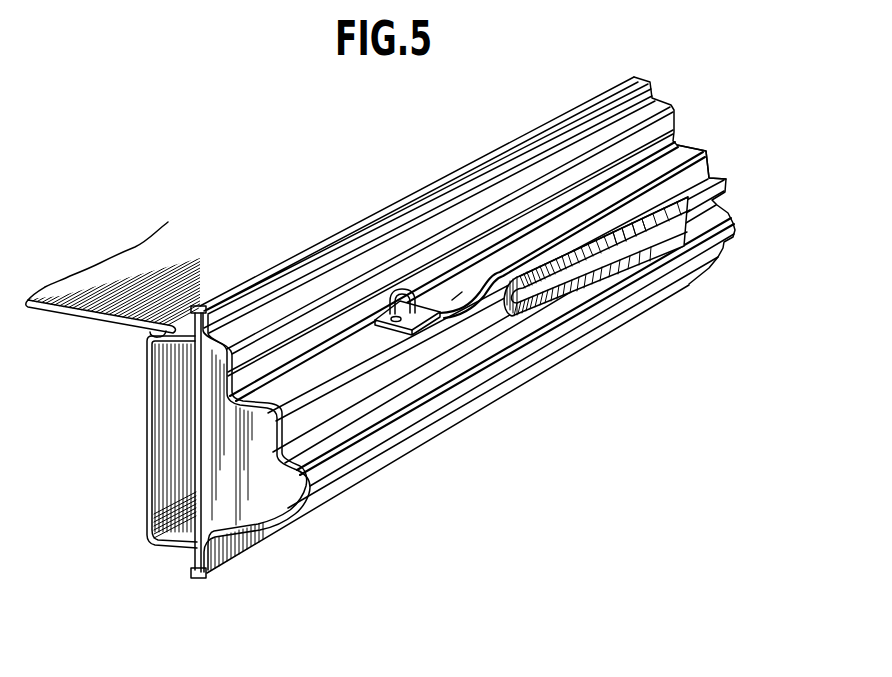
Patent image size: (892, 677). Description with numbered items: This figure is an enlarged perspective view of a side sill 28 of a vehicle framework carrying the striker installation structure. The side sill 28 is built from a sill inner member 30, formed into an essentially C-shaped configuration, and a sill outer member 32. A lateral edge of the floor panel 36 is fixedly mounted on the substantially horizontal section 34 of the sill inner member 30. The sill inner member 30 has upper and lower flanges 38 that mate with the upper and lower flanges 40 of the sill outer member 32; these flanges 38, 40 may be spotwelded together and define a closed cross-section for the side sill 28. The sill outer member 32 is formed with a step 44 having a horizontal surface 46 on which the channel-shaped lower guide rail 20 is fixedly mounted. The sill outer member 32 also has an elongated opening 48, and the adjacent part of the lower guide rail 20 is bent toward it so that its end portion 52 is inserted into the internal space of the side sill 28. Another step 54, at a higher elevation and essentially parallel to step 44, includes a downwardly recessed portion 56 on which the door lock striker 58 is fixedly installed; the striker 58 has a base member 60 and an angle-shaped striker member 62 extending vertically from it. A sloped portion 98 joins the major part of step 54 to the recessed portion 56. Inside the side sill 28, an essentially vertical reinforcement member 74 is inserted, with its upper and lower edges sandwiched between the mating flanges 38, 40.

The lower guide rail 20 is at (617, 268).
The side sill 28 is at (692, 127).
The sill inner member 30 is at (147, 503).
The sill outer member 32 is at (284, 524).
The horizontal section 34 is at (148, 333).
The floor panel 36 is at (67, 316).
The upper and lower flanges 38 is at (186, 306).
The upper and lower flanges 40 is at (210, 302).
The step 44 is at (368, 458).
The horizontal surface 46 is at (510, 353).
The elongated opening 48 is at (537, 310).
The end portion 52 is at (526, 276).
The step 54 is at (706, 151).
The downwardly recessed portion 56 is at (350, 353).
The door lock striker 58 is at (437, 276).
The base member 60 is at (380, 306).
The angle-shaped striker member 62 is at (397, 296).
The vertical reinforcement member 74 is at (200, 425).
The sloped portion 98 is at (434, 296).